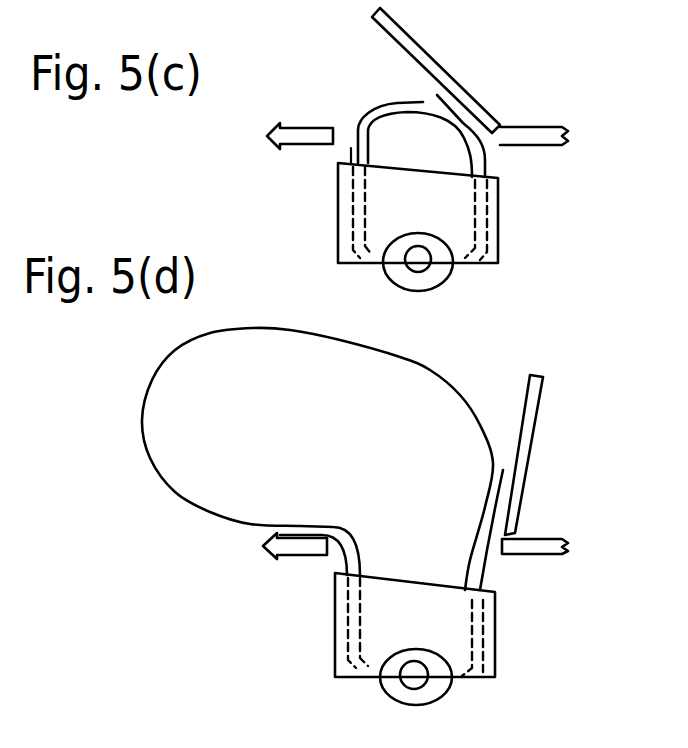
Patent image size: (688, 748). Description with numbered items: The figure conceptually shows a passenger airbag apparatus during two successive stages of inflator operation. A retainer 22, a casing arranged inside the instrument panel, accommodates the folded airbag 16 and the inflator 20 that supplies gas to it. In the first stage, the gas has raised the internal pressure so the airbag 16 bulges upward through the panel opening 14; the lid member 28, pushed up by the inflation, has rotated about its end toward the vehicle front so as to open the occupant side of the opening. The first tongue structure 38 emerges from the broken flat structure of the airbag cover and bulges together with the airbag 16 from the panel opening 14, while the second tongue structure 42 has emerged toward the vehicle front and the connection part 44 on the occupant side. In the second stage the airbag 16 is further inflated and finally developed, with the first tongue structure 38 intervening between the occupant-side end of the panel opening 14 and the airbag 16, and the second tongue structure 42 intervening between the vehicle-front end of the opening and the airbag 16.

In FIG. 5C, the opening 14 is at (332, 129).
In FIG. 5D, the opening 14 is at (330, 556).
In FIG. 5C, the airbag 16 is at (500, 211).
In FIG. 5D, the airbag 16 is at (142, 428).
In FIG. 5C, the inflator 20 is at (418, 265).
In FIG. 5D, the inflator 20 is at (414, 675).
In FIG. 5C, the retainer 22 is at (500, 246).
In FIG. 5D, the retainer 22 is at (495, 663).
In FIG. 5C, the lid member 28 is at (466, 88).
In FIG. 5D, the lid member 28 is at (532, 462).
In FIG. 5C, the first tongue structure 38 is at (358, 150).
In FIG. 5D, the first tongue structure 38 is at (295, 555).
In FIG. 5C, the second tongue structure 42 is at (490, 157).
In FIG. 5D, the second tongue structure 42 is at (497, 494).
In FIG. 5C, the connection part 44 is at (348, 153).